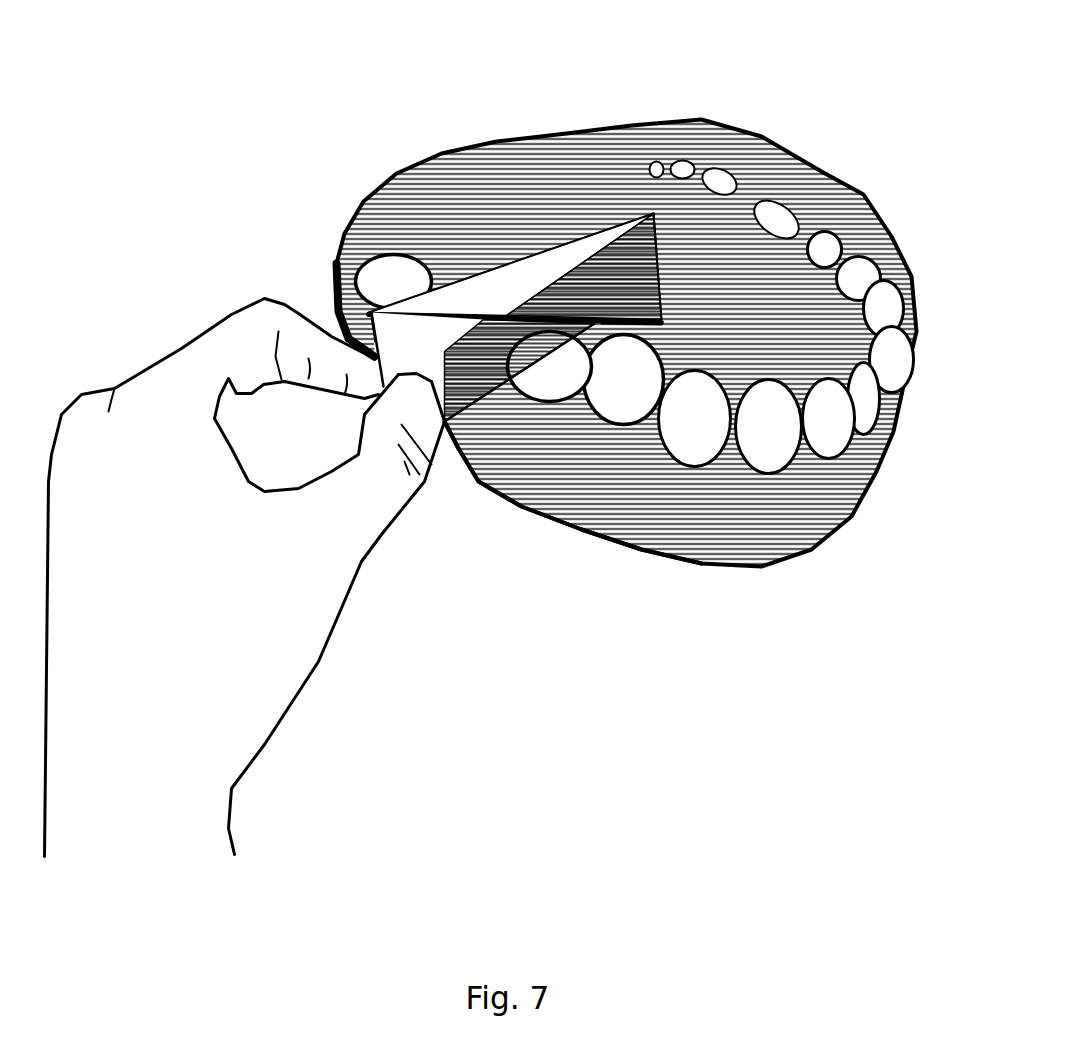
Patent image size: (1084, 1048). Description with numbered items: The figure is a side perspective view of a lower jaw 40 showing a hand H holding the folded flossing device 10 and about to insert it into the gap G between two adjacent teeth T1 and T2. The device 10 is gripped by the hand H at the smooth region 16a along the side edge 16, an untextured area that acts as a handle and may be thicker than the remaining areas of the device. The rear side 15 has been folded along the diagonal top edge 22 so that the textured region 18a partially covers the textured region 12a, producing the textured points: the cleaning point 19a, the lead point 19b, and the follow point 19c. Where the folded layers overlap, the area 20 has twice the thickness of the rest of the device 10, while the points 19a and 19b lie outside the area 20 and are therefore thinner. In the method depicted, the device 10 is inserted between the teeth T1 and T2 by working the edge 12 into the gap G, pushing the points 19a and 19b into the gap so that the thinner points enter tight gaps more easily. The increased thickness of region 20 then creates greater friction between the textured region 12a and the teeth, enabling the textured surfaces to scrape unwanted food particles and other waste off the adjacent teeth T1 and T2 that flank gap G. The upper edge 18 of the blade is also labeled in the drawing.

The flossing device 10 is at (543, 319).
The working edge 12 is at (437, 423).
The textured region 12a is at (482, 360).
The rear side 15 is at (490, 300).
The side edge 16 is at (372, 368).
The smooth region 16a is at (420, 347).
The blade edge 18 is at (425, 315).
The textured region 18a is at (607, 280).
The cleaning point 19a is at (640, 310).
The lead point 19b is at (640, 327).
The follow point 19c is at (655, 215).
The area of doubled thickness 20 is at (550, 260).
The top edge 22 is at (488, 270).
The lower jaw 40 is at (648, 357).
The gap G is at (592, 398).
The hand H is at (178, 635).
The tooth T1 is at (621, 406).
The tooth T2 is at (557, 386).